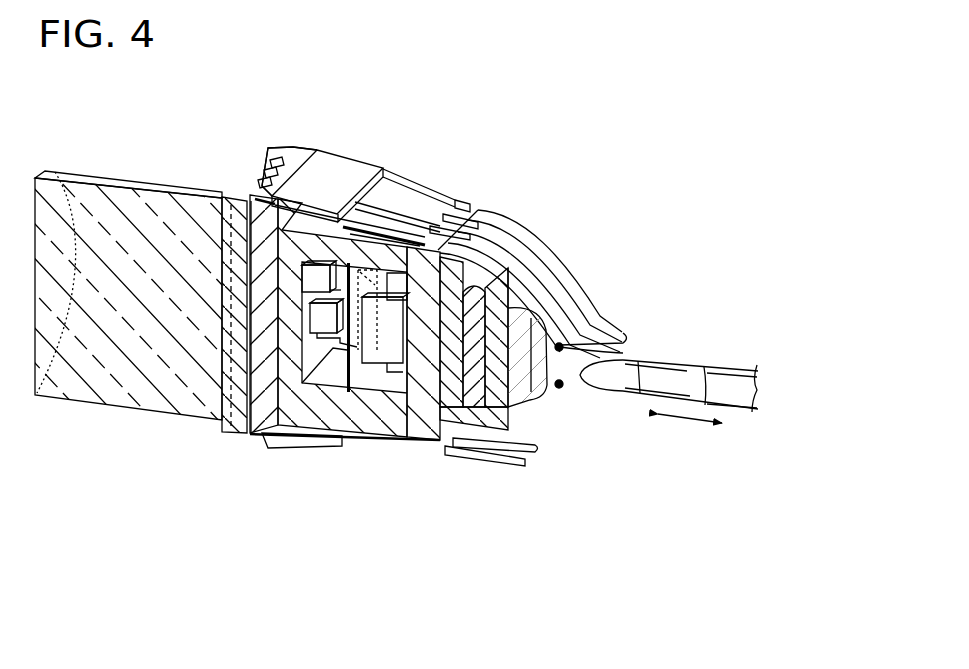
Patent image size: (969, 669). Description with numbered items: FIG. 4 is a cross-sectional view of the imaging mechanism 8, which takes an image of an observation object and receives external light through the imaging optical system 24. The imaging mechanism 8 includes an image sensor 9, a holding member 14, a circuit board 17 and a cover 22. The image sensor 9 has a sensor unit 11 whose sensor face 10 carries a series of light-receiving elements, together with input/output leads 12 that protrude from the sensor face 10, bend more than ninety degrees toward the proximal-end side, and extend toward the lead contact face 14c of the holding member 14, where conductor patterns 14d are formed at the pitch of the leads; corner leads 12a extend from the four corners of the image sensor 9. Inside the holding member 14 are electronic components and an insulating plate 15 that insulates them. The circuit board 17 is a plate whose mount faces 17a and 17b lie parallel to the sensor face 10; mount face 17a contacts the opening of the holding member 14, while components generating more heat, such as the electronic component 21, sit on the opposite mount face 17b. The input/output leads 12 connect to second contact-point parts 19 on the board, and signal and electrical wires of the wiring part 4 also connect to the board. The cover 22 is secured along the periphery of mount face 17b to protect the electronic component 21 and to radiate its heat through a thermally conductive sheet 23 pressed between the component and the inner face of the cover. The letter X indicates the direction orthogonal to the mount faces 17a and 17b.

The wiring part 4 is at (600, 316).
The imaging mechanism 8 is at (692, 145).
The image sensor 9 is at (289, 171).
The sensor face 10 is at (247, 253).
The sensor unit 11 is at (270, 218).
The input/output leads 12 is at (397, 205).
The corner leads 12a is at (425, 188).
The holding member 14 is at (322, 417).
The lead contact face 14c is at (308, 224).
The conductor patterns 14d is at (353, 232).
The insulating plate 15 is at (357, 378).
The circuit board 17 is at (422, 425).
The mount face 17a is at (392, 437).
The mount face 17b is at (443, 305).
The second contact-point parts 19 is at (432, 248).
The electronic component 21 is at (450, 400).
The cover 22 is at (500, 387).
The thermally conductive sheet 23 is at (492, 425).
The imaging optical system 24 is at (132, 394).
The direction X is at (690, 432).